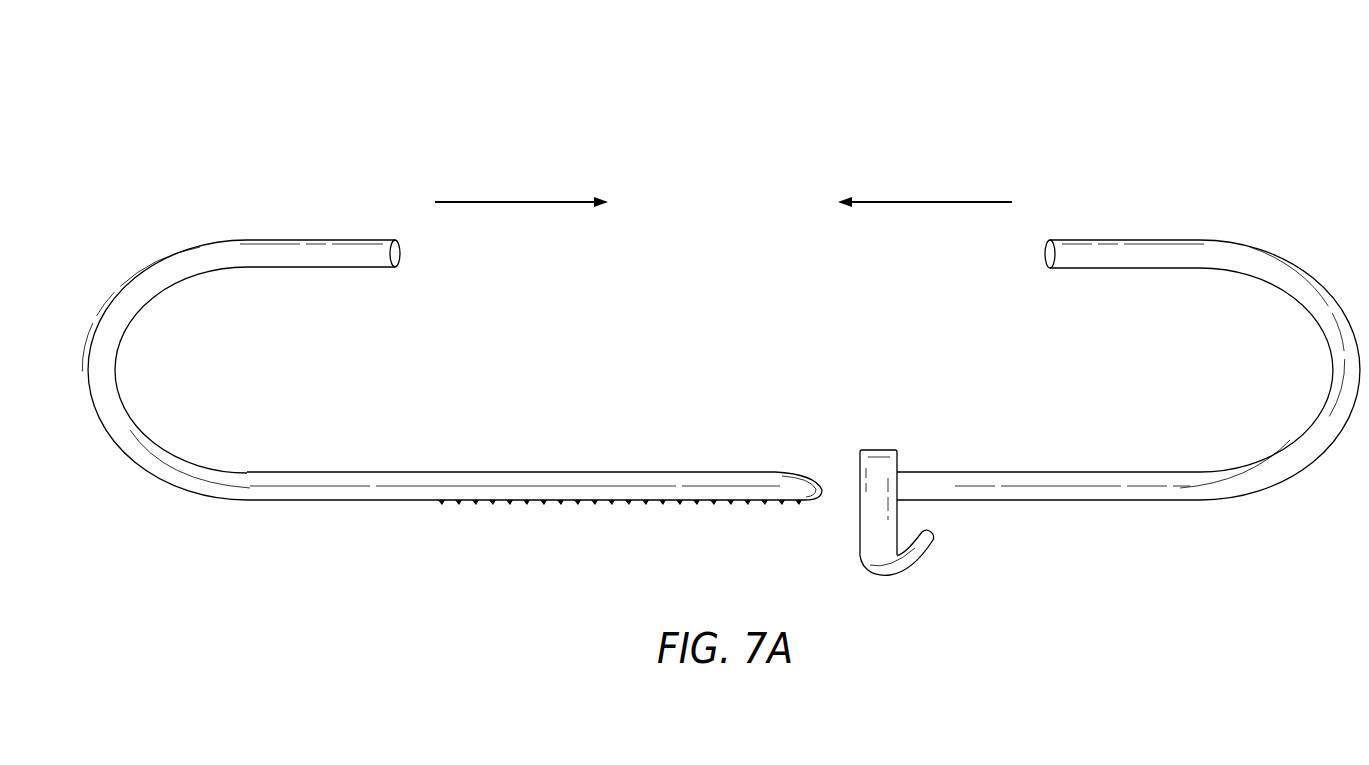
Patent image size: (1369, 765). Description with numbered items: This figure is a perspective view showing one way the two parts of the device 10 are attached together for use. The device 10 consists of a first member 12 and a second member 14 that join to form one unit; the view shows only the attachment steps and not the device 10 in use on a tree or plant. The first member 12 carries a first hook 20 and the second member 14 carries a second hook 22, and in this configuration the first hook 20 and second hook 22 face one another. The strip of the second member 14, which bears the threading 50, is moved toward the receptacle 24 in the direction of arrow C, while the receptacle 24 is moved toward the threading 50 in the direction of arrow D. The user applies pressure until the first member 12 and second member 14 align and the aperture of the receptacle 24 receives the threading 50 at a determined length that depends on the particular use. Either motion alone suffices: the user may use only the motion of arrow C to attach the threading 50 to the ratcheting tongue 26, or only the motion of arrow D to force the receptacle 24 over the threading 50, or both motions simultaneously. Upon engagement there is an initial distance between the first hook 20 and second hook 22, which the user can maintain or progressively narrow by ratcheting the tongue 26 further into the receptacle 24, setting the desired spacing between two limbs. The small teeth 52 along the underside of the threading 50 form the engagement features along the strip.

The device 10 is at (364, 110).
The first member 12 is at (1262, 192).
The second member 14 is at (117, 234).
The first hook 20 is at (1118, 239).
The second hook 22 is at (320, 239).
The receptacle 24 is at (878, 450).
The ratcheting tongue 26 is at (860, 548).
The threading 50 is at (590, 472).
The teeth 52 is at (612, 503).